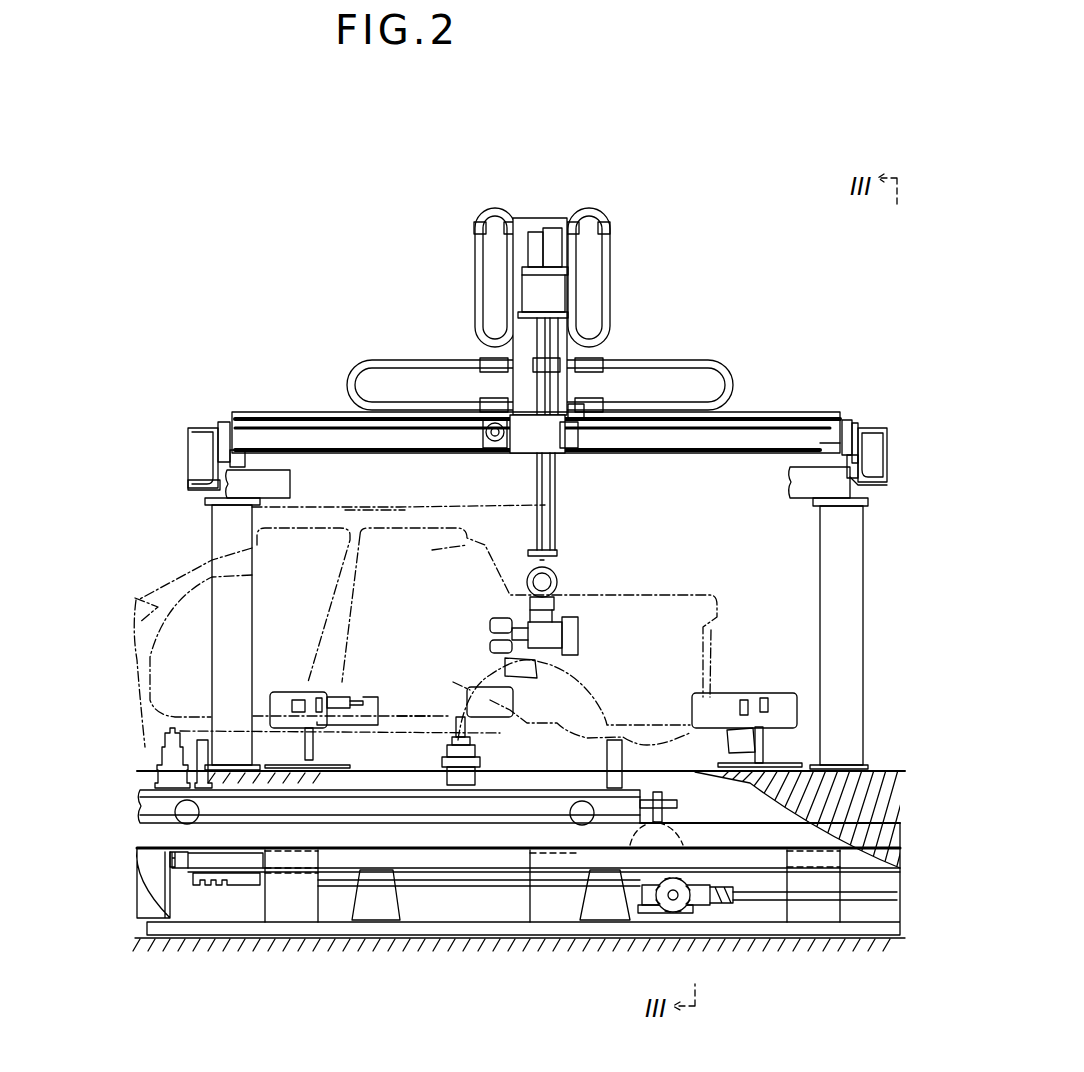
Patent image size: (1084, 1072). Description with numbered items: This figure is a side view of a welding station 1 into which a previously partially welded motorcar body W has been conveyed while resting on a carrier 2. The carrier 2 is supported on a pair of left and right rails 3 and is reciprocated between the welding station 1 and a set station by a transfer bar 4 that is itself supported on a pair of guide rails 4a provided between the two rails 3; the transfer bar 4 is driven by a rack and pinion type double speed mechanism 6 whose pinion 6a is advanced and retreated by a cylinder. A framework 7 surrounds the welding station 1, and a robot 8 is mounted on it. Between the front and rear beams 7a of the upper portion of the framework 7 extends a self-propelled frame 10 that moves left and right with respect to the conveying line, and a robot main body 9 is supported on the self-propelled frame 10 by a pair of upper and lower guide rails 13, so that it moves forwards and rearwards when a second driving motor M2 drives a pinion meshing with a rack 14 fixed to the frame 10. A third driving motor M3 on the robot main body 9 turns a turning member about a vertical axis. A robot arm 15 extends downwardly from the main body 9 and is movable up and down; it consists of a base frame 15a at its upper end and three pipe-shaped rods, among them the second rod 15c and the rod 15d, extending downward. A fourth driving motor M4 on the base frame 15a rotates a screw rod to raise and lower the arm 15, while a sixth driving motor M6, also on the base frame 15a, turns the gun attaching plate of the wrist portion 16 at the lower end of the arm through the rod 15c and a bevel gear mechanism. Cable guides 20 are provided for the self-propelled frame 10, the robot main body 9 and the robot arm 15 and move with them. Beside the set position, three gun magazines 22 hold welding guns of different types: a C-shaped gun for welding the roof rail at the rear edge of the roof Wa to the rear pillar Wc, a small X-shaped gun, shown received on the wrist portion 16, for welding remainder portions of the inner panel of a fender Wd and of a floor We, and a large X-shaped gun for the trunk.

The welding station 1 is at (695, 546).
The carrier 2 is at (340, 800).
The rails 3 is at (443, 835).
The transfer bar 4 is at (560, 870).
The guide rails 4a is at (637, 868).
The rack and pinion type double speed mechanism 6 is at (713, 872).
The pinion 6a is at (680, 908).
The framework 7 is at (870, 525).
The front and rear beams 7a is at (200, 482).
The robot 8 is at (616, 349).
The robot main body 9 is at (548, 440).
The self-propelled frame 10 is at (702, 438).
The guide rails 13 is at (792, 448).
The rack 14 is at (775, 428).
The robot arm 15 is at (567, 542).
The base frame 15a is at (560, 300).
The second rod 15c is at (542, 496).
The third rod 15d is at (557, 504).
The wrist portion 16 is at (560, 582).
The cable guides 20 is at (605, 252).
The gun magazines 22 is at (338, 767).
The second driving motor M2 is at (492, 446).
The third driving motor M3 is at (585, 405).
The fourth driving motor M4 is at (552, 240).
The sixth driving motor M6 is at (534, 232).
The motorcar body W is at (342, 497).
The roof Wa is at (405, 503).
The rear pillar Wc is at (433, 552).
The fender Wd is at (453, 682).
The floor We is at (400, 715).